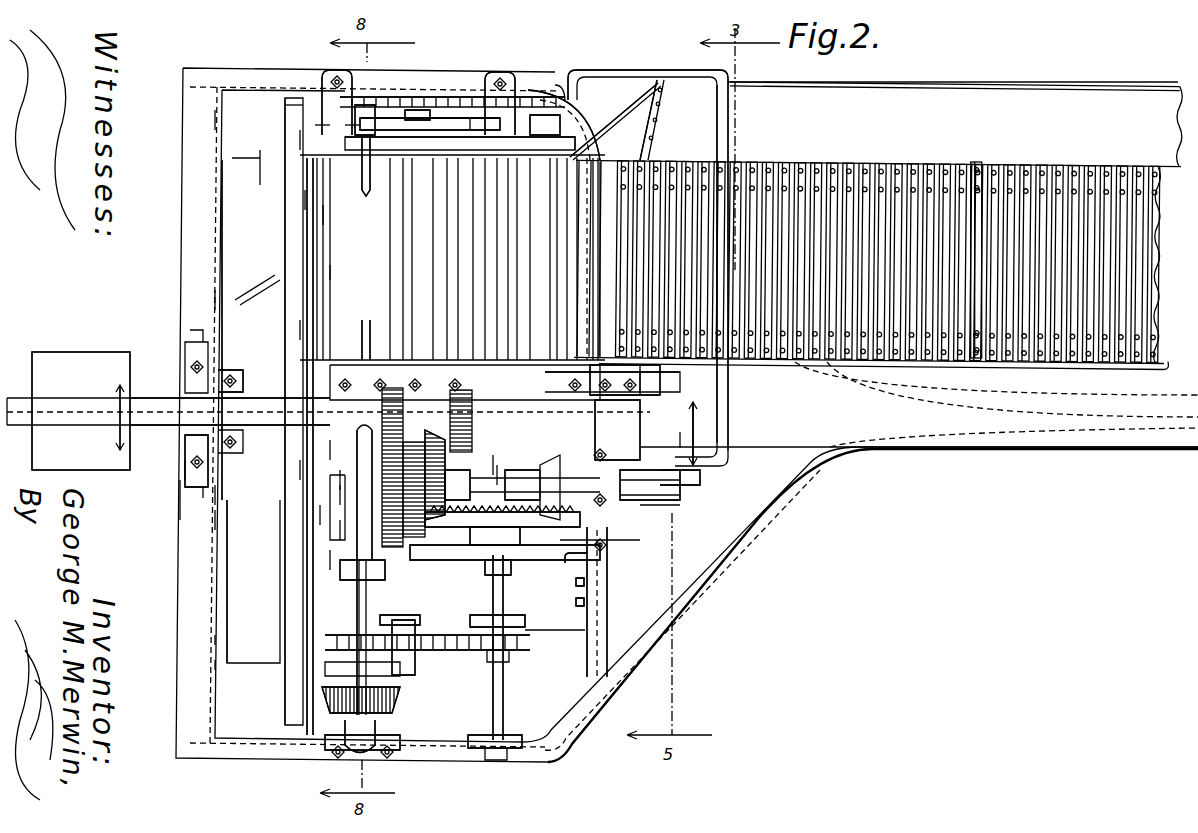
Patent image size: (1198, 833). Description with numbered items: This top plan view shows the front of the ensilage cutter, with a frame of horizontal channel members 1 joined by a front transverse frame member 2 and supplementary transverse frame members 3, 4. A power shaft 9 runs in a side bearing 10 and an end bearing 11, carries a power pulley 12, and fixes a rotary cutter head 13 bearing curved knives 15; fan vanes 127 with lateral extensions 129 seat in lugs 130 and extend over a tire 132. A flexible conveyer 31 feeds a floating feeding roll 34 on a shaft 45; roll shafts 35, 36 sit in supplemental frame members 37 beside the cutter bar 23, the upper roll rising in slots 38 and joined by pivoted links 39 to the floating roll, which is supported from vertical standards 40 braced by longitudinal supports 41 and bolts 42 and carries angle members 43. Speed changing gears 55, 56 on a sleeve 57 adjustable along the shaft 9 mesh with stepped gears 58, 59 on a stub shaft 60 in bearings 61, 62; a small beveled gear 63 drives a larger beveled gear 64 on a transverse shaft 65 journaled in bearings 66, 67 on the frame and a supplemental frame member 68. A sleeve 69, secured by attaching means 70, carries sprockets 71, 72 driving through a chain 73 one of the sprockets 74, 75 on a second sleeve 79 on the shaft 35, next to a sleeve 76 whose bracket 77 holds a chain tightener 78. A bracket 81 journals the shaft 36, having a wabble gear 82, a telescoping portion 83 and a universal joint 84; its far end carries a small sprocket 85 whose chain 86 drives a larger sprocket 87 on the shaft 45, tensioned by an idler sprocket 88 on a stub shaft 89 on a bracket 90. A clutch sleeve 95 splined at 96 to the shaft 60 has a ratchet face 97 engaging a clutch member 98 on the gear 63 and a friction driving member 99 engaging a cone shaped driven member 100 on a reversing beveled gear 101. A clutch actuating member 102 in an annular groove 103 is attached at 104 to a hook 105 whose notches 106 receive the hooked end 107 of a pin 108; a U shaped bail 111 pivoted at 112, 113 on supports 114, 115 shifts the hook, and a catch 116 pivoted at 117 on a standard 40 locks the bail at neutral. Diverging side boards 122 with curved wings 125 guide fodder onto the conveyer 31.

The horizontal frame members 1 is at (545, 80).
The transversely extending frame member 2 is at (180, 495).
The supplementary transverse frame member 3 is at (315, 730).
The supplementary transverse frame member 4 is at (630, 700).
The rotary power shaft 9 is at (140, 400).
The side bearing 10 is at (185, 450).
The end bearing 11 is at (650, 395).
The power pulley 12 is at (60, 352).
The rotary cutter head 13 is at (290, 106).
The curved cutters or knives 15 is at (310, 200).
The cutter bar 23 is at (315, 165).
The feeding apron or conveyer 31 is at (975, 162).
The floating feeder roll 34 is at (505, 100).
The shaft 35 is at (385, 100).
The shaft 36 is at (330, 560).
The supplemental frame members 37 is at (440, 125).
The slots 38 is at (300, 132).
The pivoted links 39 is at (455, 140).
The vertical standards 40 is at (530, 150).
The longitudinal supports 41 is at (330, 215).
The bolts 42 is at (600, 170).
The angle-section members 43 is at (330, 270).
The floating feeder shaft 45 is at (520, 120).
The speed changing gear 55 is at (238, 366).
The speed changing gear 56 is at (330, 450).
The sleeve 57 is at (300, 470).
The stepped gear 58 is at (340, 480).
The stepped gear 59 is at (340, 495).
The stub shaft 60 is at (680, 495).
The bearing 61 is at (340, 530).
The bearing 62 is at (680, 505).
The small beveled gear 63 is at (357, 500).
The larger beveled gear 64 is at (607, 548).
The transverse stub shaft 65 is at (584, 582).
The bearing 66 is at (490, 738).
The bearing 67 is at (490, 570).
The supplemental frame member 68 is at (580, 560).
The sleeve 69 is at (584, 602).
The removable attaching means 70 is at (495, 655).
The sprocket 71 is at (540, 620).
The sprocket 72 is at (540, 630).
The chain 73 is at (430, 642).
The sprocket 74 is at (215, 640).
The sprocket 75 is at (215, 665).
The sleeve 76 is at (372, 570).
The bracket 77 is at (395, 622).
The chain tightener 78 is at (415, 640).
The second sleeve 79 is at (390, 680).
The bracket 81 is at (355, 715).
The wabble gear 82 is at (345, 735).
The extensible telescoping portion 83 is at (320, 515).
The universal joint connection 84 is at (215, 495).
The small sprocket 85 is at (360, 110).
The chain 86 is at (425, 128).
The larger sprocket 87 is at (470, 120).
The idler sprocket 88 is at (317, 130).
The stub shaft 89 is at (345, 125).
The bracket 90 is at (470, 100).
The clutch sleeve 95 is at (460, 520).
The spline 96 is at (520, 527).
The ratchet face 97 is at (455, 490).
The clutch member 98 is at (437, 470).
The frictional driving member 99 is at (520, 475).
The cone shaped driven member 100 is at (660, 410).
The beveled gear 101 is at (605, 522).
The clutch actuating member 102 is at (497, 470).
The annular groove 103 is at (470, 550).
The adjustable attachment 104 is at (493, 460).
The hook 105 is at (680, 487).
The notches 106 is at (680, 480).
The hooked end 107 is at (690, 425).
The pin 108 is at (750, 478).
The U shaped bail 111 is at (728, 138).
The pivot 112 is at (655, 90).
The pivot 113 is at (690, 438).
The support 114 is at (590, 73).
The support 115 is at (670, 470).
The catch 116 is at (680, 382).
The pivot 117 is at (640, 372).
The side boards 122 is at (912, 76).
The curved wings 125 is at (615, 135).
The fan vanes 127 is at (222, 250).
The lateral extensions 129 is at (235, 120).
The lugs 130 is at (250, 280).
The tire 132 is at (293, 100).